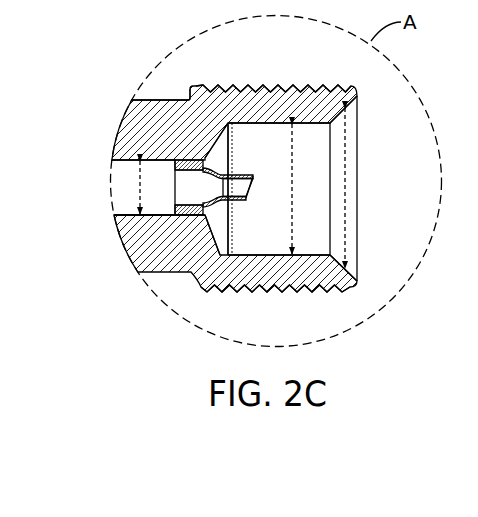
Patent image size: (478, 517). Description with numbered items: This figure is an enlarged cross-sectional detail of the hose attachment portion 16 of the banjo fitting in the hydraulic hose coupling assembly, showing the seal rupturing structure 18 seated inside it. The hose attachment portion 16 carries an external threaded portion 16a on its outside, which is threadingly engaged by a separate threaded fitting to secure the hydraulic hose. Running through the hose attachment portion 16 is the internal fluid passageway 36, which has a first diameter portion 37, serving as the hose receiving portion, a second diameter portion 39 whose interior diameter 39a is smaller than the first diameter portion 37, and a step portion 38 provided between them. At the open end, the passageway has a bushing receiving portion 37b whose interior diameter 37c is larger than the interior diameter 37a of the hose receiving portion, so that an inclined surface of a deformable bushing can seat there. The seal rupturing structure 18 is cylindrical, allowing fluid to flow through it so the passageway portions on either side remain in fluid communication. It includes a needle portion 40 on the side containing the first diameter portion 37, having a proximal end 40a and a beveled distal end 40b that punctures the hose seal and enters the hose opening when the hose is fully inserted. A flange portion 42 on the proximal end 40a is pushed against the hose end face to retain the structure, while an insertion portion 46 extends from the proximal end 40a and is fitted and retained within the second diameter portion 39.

The hose attachment portion 16 is at (178, 274).
The external threaded portion 16a is at (247, 85).
The seal rupturing structure 18 is at (238, 166).
The internal fluid passageway 36 is at (317, 195).
The first diameter portion 37 is at (190, 96).
The interior diameter of hose receiving portion 37a is at (292, 168).
The bushing receiving portion 37b is at (352, 258).
The interior diameter of bushing receiving portion 37c is at (345, 187).
The step portion 38 is at (208, 152).
The second diameter portion 39 is at (182, 163).
The interior diameter of second diameter portion 39a is at (140, 185).
The needle portion 40 is at (306, 304).
The proximal end 40a is at (231, 201).
The beveled distal end 40b is at (249, 200).
The flange portion 42 is at (218, 203).
The insertion portion 46 is at (167, 214).